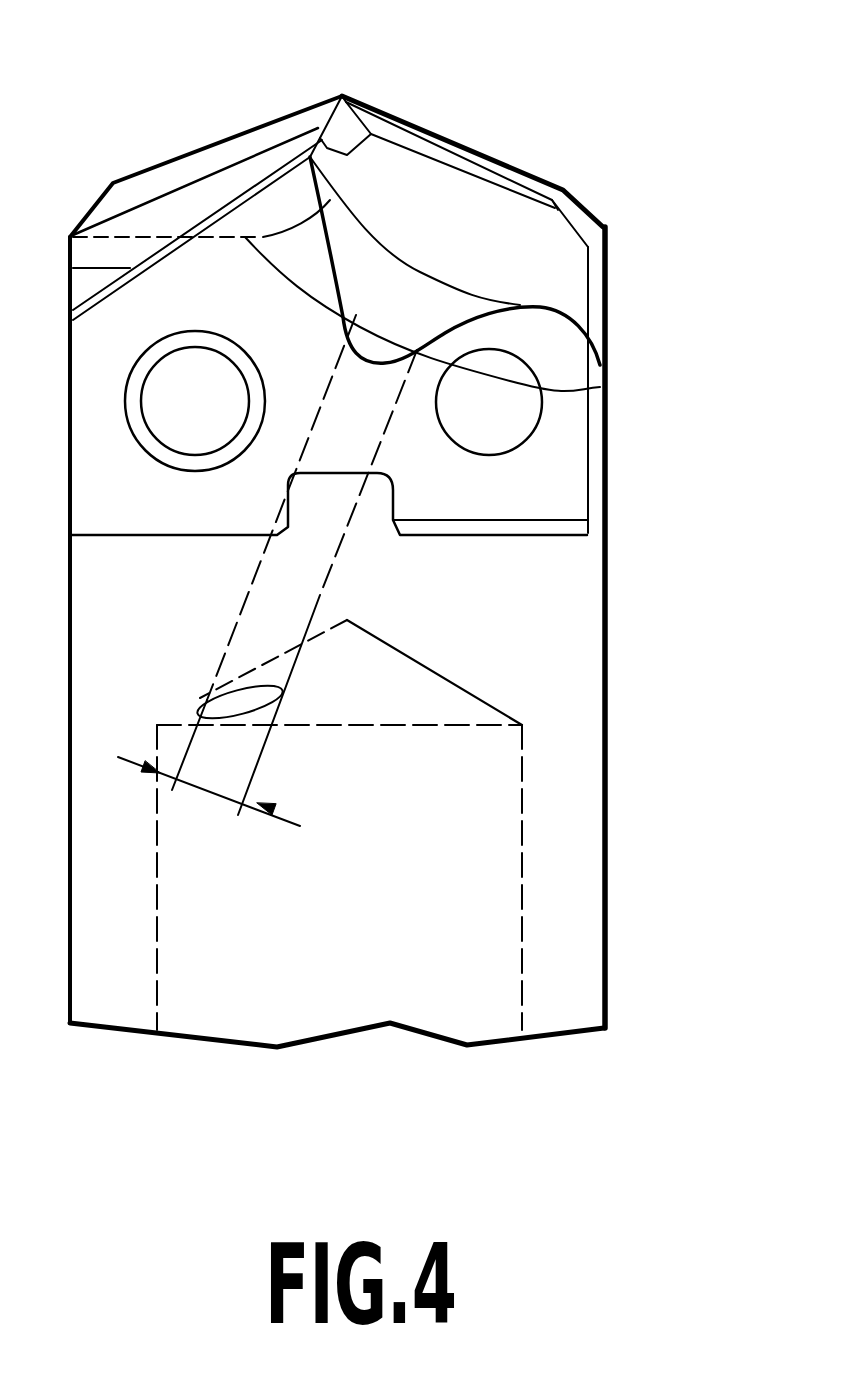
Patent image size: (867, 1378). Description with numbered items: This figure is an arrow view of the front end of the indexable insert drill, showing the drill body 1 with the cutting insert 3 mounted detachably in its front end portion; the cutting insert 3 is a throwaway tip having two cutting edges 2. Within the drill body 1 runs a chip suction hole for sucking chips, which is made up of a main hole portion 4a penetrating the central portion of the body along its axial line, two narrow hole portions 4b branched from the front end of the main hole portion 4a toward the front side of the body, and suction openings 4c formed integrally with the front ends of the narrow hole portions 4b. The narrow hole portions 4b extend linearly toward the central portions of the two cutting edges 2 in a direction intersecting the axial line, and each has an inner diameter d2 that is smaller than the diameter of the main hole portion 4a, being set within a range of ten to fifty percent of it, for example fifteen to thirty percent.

The drill body 1 is at (605, 753).
The cutting edges 2 is at (213, 143).
The cutting insert 3 is at (605, 290).
The main hole portion 4a is at (590, 845).
The narrow hole portions 4b is at (320, 597).
The suction openings 4c is at (440, 337).
The inner diameter d2 is at (209, 802).